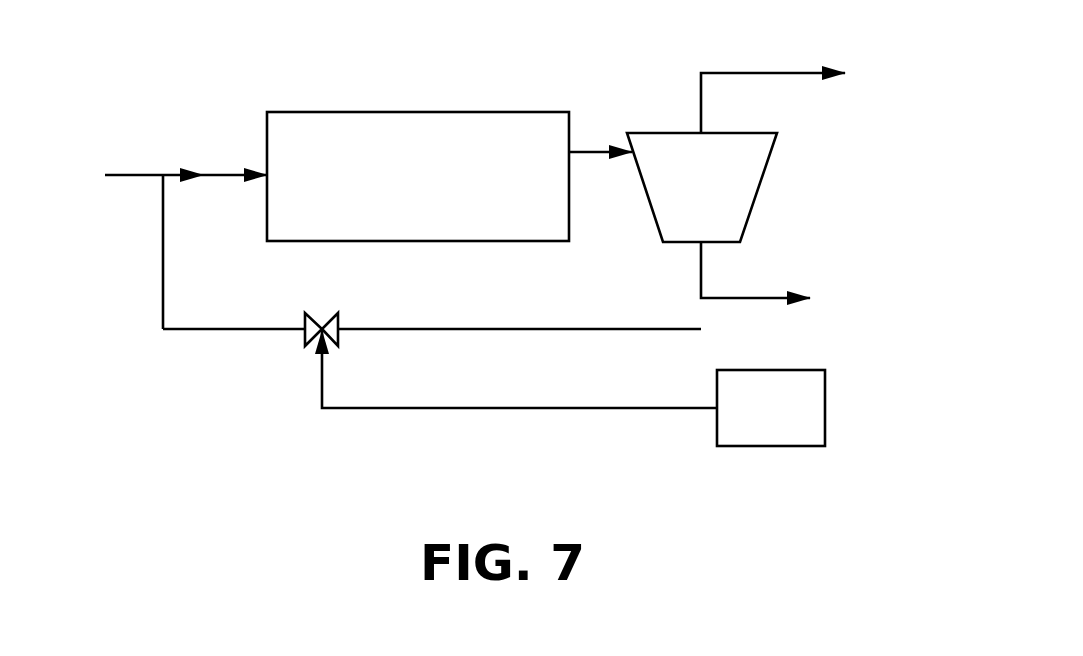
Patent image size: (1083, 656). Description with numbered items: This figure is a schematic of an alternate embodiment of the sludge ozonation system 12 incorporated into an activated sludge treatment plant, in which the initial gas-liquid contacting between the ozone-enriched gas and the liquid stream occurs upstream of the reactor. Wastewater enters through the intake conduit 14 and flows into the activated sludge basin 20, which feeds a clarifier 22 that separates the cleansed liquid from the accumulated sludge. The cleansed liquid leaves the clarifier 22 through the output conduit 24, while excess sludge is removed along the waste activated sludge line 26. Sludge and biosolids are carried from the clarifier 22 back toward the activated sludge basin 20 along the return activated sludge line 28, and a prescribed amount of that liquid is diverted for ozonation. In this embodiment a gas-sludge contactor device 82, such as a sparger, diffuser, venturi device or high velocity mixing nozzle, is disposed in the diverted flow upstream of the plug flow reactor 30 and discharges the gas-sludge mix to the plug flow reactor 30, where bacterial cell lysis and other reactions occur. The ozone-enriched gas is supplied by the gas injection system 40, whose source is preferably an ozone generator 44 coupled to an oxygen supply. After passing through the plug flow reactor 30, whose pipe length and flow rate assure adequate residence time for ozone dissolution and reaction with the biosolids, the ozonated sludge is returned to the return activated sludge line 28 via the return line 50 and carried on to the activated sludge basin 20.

The sludge ozonation system 12 is at (153, 78).
The intake conduit 14 is at (130, 175).
The activated sludge basin 20 is at (467, 111).
The clarifier 22 is at (745, 185).
The output conduit 24 is at (757, 70).
The waste activated sludge line 26 is at (738, 297).
The return activated sludge line 28 is at (592, 328).
The plug flow reactor 30 is at (202, 370).
The gas injection system 40 is at (695, 430).
The ozone generator 44 is at (815, 407).
The return line 50 is at (162, 213).
The gas-sludge contactor device 82 is at (327, 317).